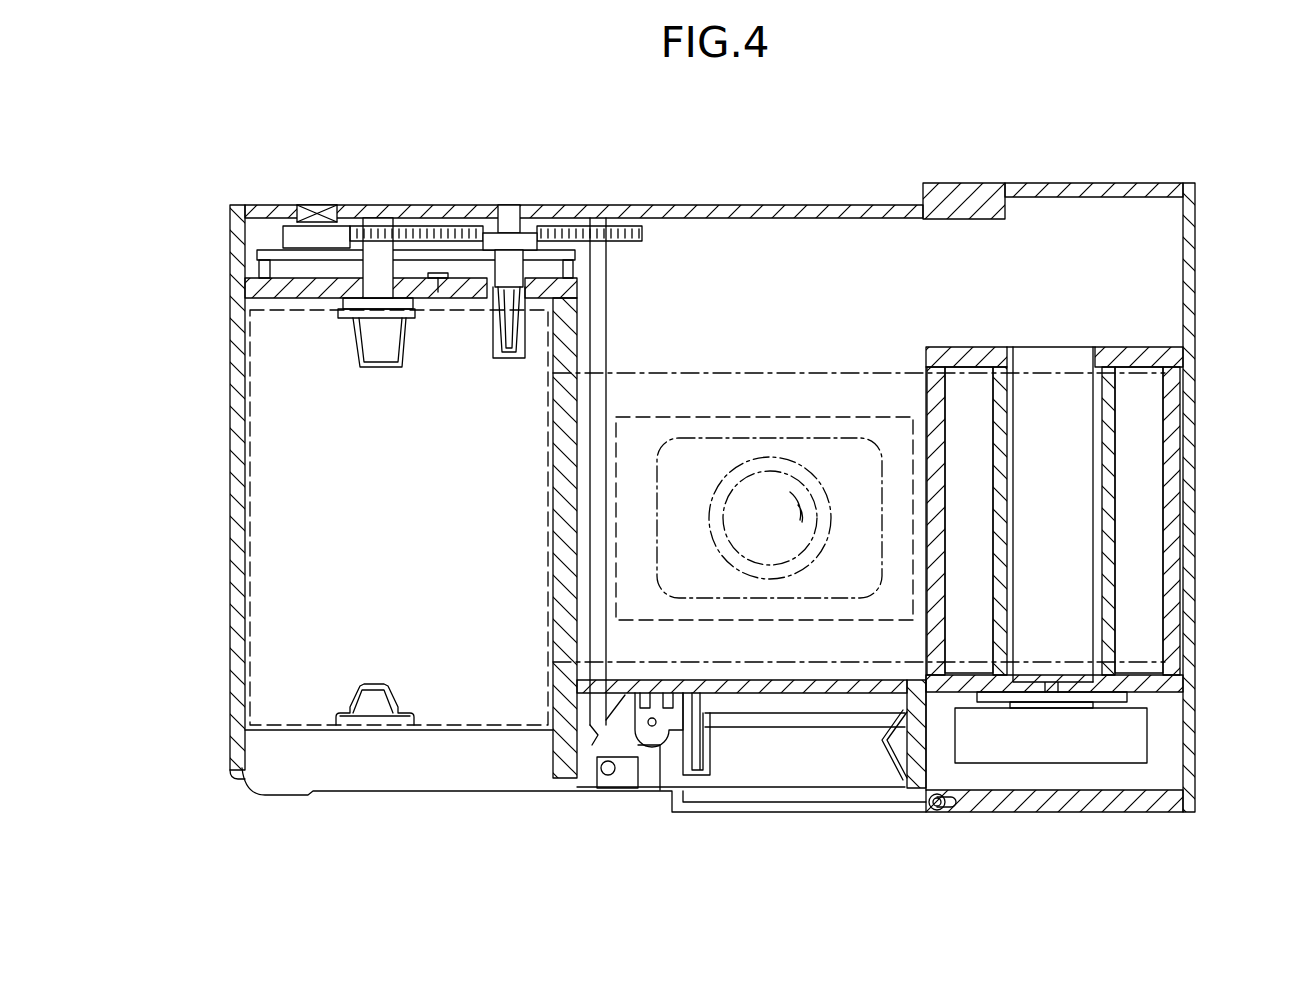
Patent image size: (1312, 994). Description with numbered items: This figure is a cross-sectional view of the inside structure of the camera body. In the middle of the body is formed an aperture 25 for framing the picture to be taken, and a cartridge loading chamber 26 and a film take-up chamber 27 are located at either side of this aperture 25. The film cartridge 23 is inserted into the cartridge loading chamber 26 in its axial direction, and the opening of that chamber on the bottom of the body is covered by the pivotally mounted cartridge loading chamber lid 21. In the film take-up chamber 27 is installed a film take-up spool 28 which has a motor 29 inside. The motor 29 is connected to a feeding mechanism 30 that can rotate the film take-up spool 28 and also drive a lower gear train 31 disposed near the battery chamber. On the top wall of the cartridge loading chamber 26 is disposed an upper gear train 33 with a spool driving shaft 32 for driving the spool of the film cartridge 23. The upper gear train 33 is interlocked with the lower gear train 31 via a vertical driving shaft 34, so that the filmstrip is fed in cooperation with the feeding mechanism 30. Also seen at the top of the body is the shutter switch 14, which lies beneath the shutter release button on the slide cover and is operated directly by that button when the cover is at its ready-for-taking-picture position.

The shutter switch 14 is at (312, 205).
The cartridge loading chamber lid 21 is at (338, 773).
The film cartridge 23 is at (333, 544).
The aperture 25 is at (757, 428).
The cartridge loading chamber 26 is at (262, 303).
The film take-up chamber 27 is at (1143, 549).
The film take-up spool 28 is at (1103, 625).
The motor 29 is at (1052, 425).
The feeding mechanism 30 is at (1105, 722).
The lower gear train 31 is at (758, 720).
The spool driving shaft 32 is at (381, 250).
The upper gear train 33 is at (438, 235).
The vertical driving shaft 34 is at (600, 280).